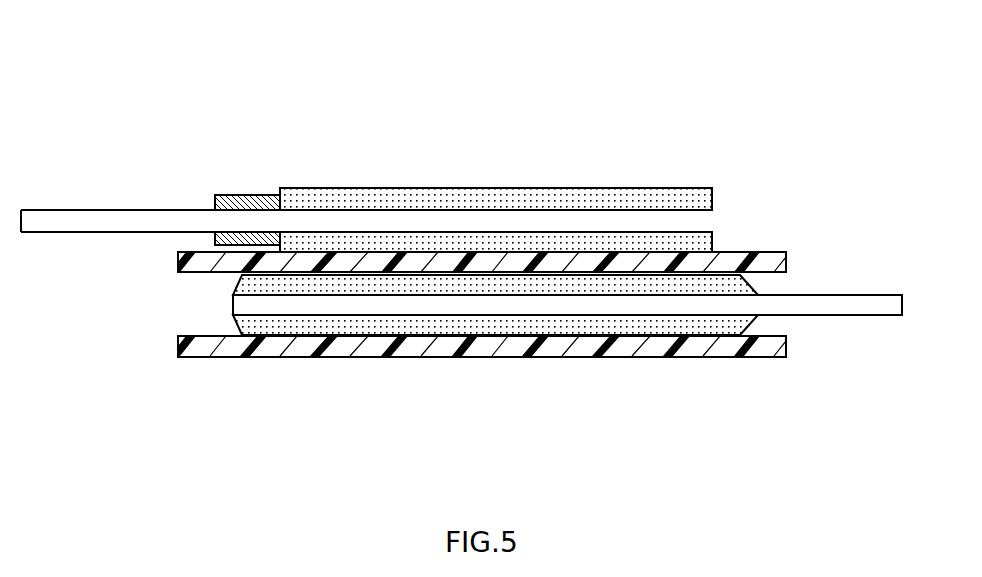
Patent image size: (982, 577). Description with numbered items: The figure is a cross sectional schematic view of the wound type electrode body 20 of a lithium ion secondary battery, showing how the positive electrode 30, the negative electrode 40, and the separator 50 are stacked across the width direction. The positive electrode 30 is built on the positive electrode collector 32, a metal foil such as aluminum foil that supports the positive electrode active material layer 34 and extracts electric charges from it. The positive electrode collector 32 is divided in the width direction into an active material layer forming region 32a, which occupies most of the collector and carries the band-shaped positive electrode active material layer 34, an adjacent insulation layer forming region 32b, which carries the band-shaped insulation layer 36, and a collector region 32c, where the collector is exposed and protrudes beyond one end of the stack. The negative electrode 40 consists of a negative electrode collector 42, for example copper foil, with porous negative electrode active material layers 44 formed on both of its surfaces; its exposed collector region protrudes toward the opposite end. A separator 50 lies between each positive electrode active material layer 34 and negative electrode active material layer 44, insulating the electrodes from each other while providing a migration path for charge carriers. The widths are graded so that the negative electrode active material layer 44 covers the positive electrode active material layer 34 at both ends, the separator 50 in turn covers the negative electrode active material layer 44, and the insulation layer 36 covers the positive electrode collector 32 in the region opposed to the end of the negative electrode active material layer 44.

The wound type electrode body 20 is at (697, 110).
The positive electrode 30 is at (733, 168).
The positive electrode collector 32 is at (713, 222).
The active material layer forming region 32a is at (440, 209).
The insulation layer forming region 32b is at (249, 210).
The collector region 32c is at (92, 209).
The positive electrode active material layer 34 is at (322, 188).
The insulation layer 36 is at (222, 195).
The negative electrode 40 is at (137, 290).
The negative electrode collector 42 is at (858, 292).
The negative electrode active material layer 44 is at (233, 328).
The separator 50 is at (786, 262).